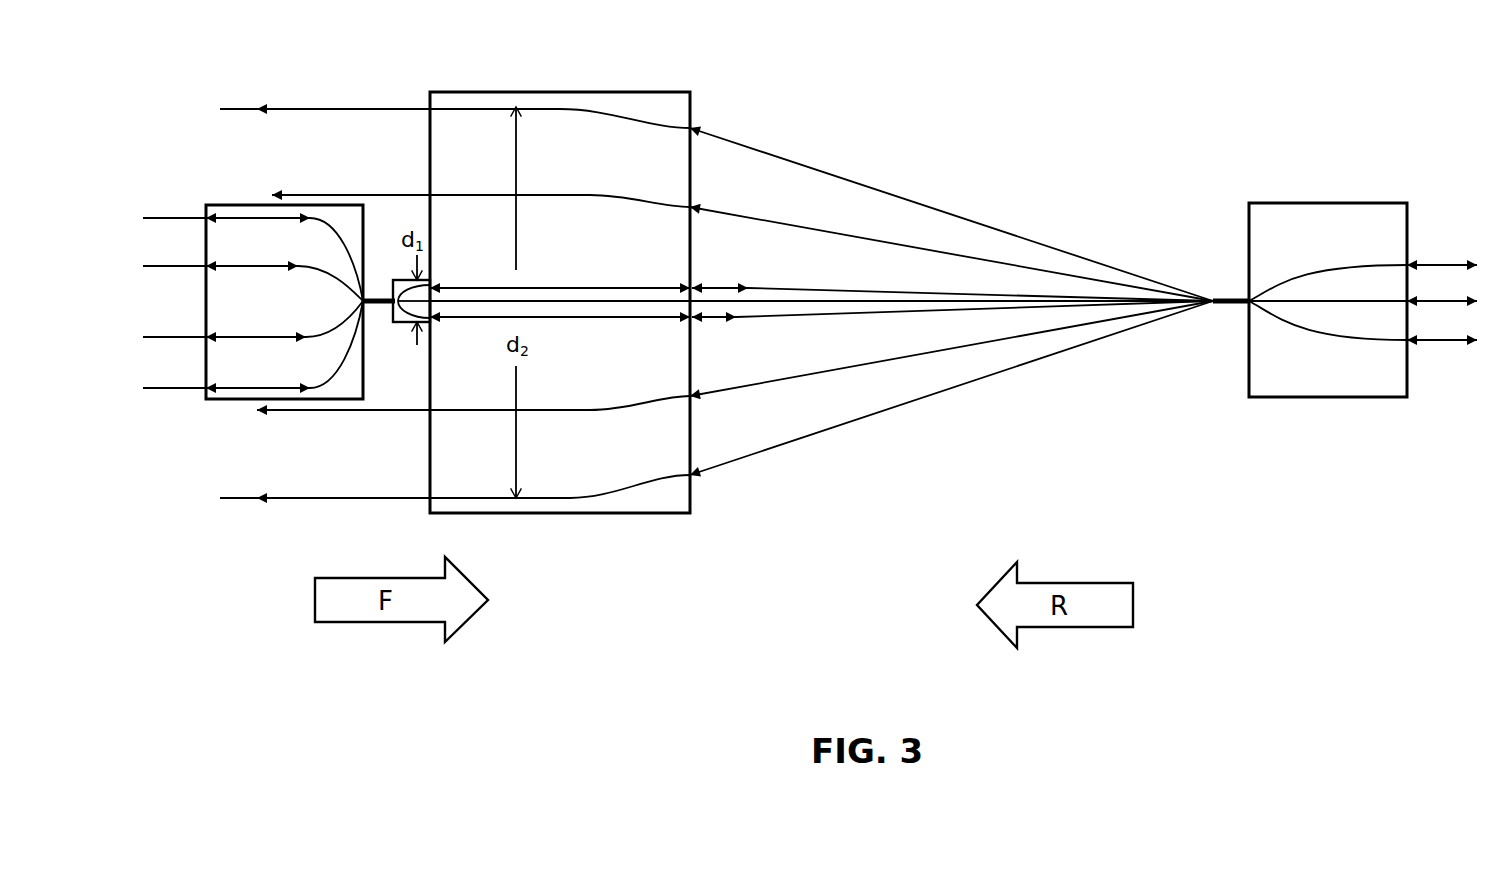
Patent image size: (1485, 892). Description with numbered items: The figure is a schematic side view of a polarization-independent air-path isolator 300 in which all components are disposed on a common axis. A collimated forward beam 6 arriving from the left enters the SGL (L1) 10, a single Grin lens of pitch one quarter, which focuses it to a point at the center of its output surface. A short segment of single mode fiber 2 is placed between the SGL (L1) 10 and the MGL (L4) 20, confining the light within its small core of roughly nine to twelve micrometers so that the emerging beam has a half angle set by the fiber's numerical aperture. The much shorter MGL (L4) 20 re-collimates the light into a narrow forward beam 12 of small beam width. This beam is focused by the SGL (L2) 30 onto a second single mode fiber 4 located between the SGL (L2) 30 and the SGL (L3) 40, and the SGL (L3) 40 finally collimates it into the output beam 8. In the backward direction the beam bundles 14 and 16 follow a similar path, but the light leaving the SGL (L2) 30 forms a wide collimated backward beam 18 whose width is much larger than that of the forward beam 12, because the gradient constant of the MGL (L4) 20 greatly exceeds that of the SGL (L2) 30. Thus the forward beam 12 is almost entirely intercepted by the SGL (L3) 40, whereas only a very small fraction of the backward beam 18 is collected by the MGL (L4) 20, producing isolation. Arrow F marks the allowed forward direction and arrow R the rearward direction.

The fiber 2 is at (376, 301).
The fiber 4 is at (1230, 307).
The collimated forward beam 6 is at (188, 397).
The collimated output beam 8 is at (1443, 346).
The SGL (L1) 10 is at (220, 205).
The collimated forward beam 12 is at (455, 282).
The backward beam bundle 14 is at (947, 209).
The backward beam bundle 16 is at (720, 282).
The collimated backward beam 18 is at (400, 412).
The MGL (L4) 20 is at (393, 325).
The SGL (L2) 30 is at (522, 92).
The SGL (L3) 40 is at (1305, 203).
The air-path isolator 300 is at (1062, 84).